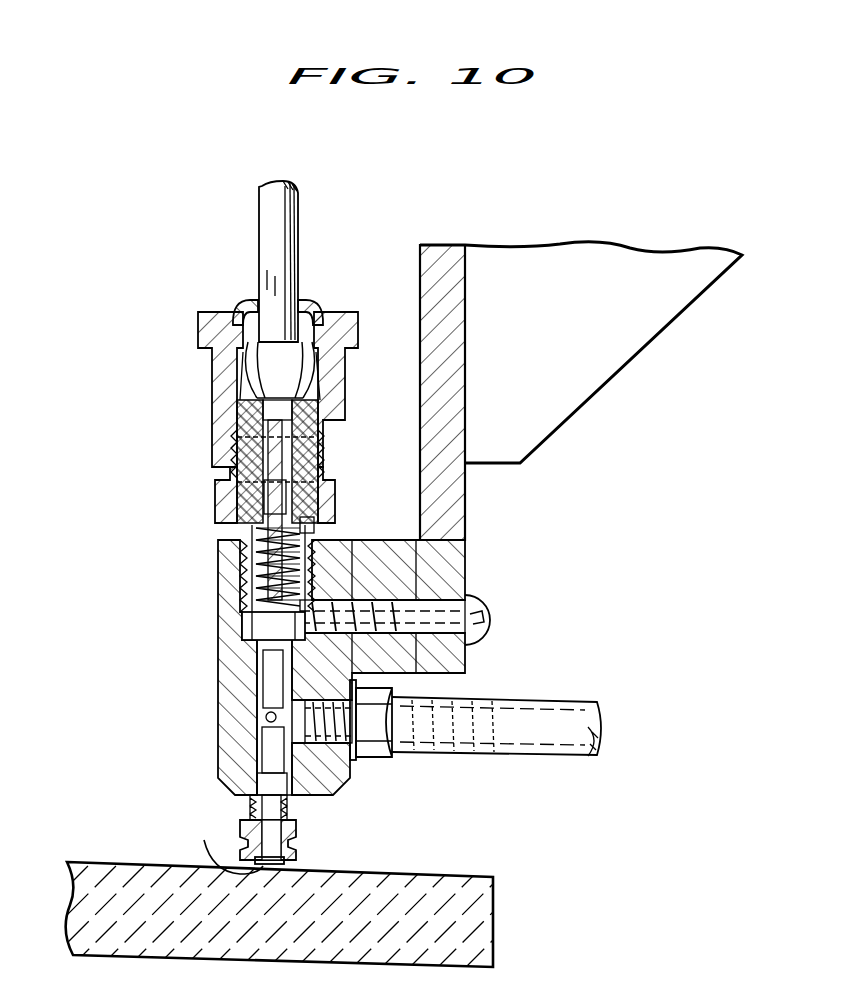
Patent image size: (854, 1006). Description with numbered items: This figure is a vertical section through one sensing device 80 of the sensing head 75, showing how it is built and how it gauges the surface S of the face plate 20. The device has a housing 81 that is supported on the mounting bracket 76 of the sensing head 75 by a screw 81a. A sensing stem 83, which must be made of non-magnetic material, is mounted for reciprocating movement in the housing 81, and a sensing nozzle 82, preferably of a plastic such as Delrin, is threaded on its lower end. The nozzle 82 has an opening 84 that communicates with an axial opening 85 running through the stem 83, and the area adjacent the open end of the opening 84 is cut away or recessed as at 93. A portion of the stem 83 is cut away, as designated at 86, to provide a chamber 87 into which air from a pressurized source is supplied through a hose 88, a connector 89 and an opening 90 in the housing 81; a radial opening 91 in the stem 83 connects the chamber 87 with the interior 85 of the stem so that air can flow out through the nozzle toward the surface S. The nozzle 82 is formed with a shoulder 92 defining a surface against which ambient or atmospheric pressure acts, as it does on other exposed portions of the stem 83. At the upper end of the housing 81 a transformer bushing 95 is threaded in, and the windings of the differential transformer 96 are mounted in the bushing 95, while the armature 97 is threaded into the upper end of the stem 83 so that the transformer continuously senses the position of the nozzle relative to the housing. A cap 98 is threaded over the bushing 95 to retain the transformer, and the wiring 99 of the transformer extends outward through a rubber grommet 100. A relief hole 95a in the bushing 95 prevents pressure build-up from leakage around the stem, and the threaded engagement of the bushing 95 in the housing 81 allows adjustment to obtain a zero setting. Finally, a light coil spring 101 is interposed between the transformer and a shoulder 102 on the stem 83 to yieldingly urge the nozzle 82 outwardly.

The wiring 99 is at (272, 202).
The rubber grommet 100 is at (246, 300).
The cap 98 is at (206, 328).
The armature 97 is at (262, 424).
The differential transformer 96 is at (232, 453).
The transformer bushing 95 is at (228, 498).
The relief hole 95a is at (316, 526).
The light coil spring 101 is at (232, 548).
The sensing device 80 is at (178, 568).
The shoulder 102 is at (245, 620).
The housing 81 is at (238, 657).
The screw 81a is at (480, 607).
The radial opening 91 is at (264, 717).
The cut-away portion 86 is at (258, 733).
The chamber 87 is at (256, 748).
The sensing stem 83 is at (258, 768).
The axial opening 85 is at (262, 784).
The shoulder 92 is at (247, 814).
The recess 93 is at (219, 857).
The sensing nozzle 82 is at (298, 831).
The opening 84 is at (288, 858).
The face plate 20 is at (525, 899).
The hose 88 is at (578, 720).
The connector 89 is at (358, 752).
The opening 90 is at (312, 742).
The sensing head 75 is at (620, 405).
The mounting bracket 76 is at (460, 496).
The surface S is at (432, 874).